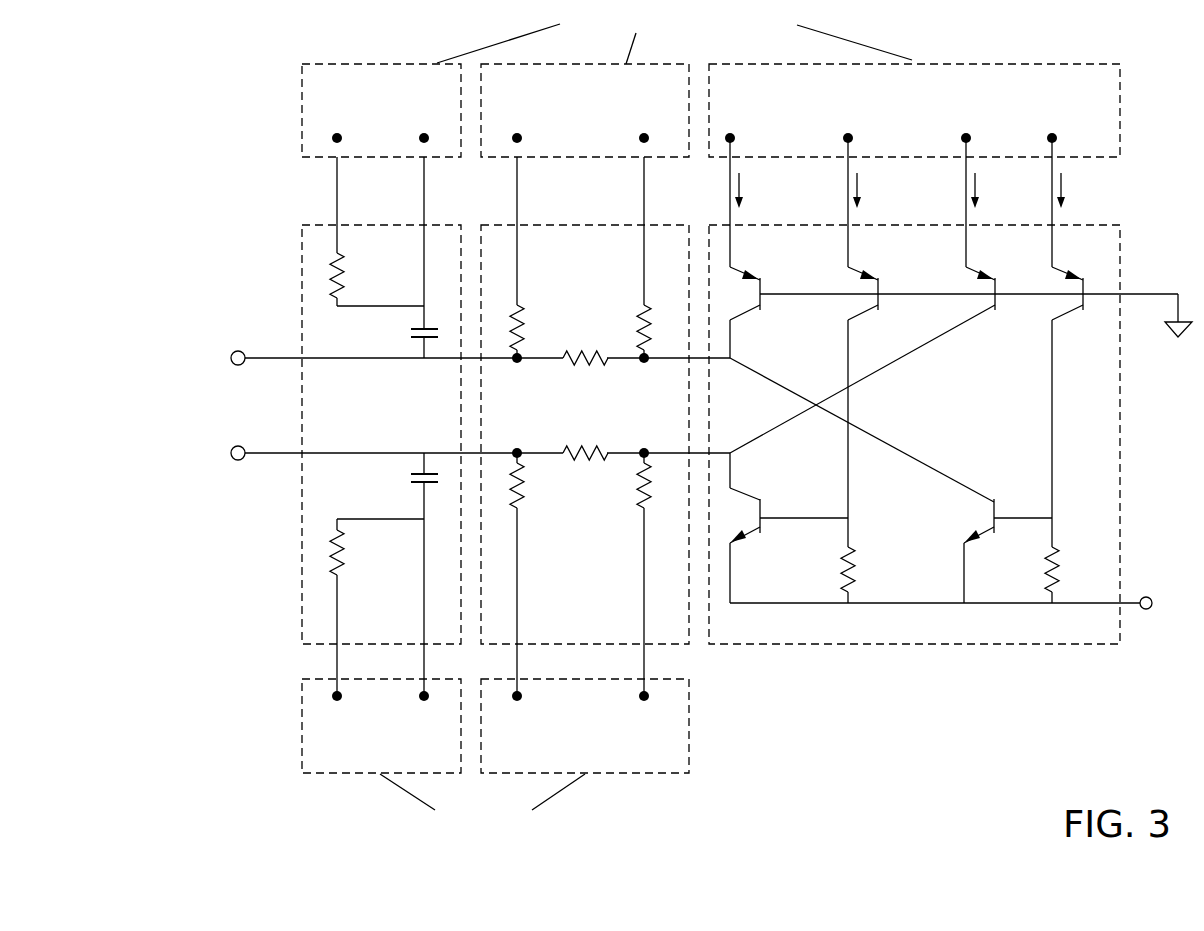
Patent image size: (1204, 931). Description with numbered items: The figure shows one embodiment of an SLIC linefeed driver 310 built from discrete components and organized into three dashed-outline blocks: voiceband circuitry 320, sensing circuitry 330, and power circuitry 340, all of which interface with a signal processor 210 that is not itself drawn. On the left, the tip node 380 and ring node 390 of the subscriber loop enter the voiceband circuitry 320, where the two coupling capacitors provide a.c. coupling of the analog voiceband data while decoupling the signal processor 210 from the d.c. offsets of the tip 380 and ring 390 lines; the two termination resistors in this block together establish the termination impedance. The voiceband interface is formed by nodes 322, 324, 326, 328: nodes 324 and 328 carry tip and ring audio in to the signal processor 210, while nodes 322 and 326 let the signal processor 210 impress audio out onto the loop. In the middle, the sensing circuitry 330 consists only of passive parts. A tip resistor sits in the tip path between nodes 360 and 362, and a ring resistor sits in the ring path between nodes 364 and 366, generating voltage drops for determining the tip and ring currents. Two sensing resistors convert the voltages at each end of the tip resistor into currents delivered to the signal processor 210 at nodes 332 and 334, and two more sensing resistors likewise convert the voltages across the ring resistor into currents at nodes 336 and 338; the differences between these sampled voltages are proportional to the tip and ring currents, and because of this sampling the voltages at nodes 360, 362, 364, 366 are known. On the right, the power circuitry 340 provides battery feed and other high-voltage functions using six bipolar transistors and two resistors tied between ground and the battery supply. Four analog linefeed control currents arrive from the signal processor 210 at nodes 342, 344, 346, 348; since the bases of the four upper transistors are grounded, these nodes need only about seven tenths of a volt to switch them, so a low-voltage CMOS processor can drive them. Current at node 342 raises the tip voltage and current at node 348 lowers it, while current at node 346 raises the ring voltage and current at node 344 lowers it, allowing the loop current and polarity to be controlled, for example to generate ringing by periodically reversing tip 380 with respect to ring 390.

The subscriber line interface circuit 310 is at (257, 147).
The signal processor 210 is at (641, 420).
The voiceband circuitry 320 is at (302, 386).
The node 322 is at (337, 128).
The node 324 is at (424, 128).
The node 326 is at (337, 708).
The node 328 is at (424, 708).
The sensing circuitry 330 is at (684, 644).
The node 332 is at (517, 128).
The node 334 is at (644, 128).
The node 336 is at (512, 708).
The node 338 is at (644, 708).
The power circuitry 340 is at (900, 645).
The node 342 is at (728, 127).
The node 344 is at (846, 127).
The node 346 is at (964, 127).
The node 348 is at (1050, 127).
The node 360 is at (517, 373).
The node 362 is at (644, 373).
The node 364 is at (517, 444).
The node 366 is at (644, 444).
The tip node 380 is at (476, 326).
The ring node 390 is at (474, 477).